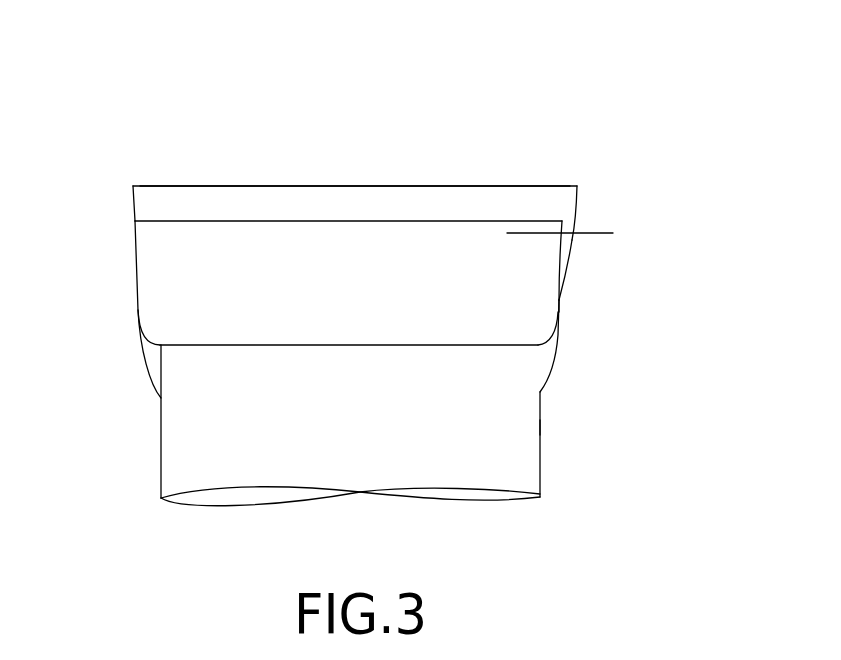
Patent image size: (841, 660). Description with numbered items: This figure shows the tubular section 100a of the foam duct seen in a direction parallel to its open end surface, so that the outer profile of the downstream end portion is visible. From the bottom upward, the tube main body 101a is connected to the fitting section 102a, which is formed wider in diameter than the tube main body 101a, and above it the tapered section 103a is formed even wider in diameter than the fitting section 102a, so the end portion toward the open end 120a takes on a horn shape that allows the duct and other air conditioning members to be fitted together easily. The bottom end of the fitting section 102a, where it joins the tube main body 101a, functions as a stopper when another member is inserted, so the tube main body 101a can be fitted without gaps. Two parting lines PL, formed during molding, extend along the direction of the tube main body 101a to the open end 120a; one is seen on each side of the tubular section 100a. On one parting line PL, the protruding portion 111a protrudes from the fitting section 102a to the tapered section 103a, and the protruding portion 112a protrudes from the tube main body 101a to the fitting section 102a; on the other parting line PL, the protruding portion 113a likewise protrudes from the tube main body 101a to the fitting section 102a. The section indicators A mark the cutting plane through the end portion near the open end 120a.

The tubular section 100a is at (397, 311).
The tube main body 101a is at (182, 446).
The fitting section 102a is at (152, 286).
The tapered section 103a is at (152, 205).
The protruding portion 111a is at (576, 248).
The protruding portion 112a is at (558, 367).
The protruding portion 113a is at (140, 362).
The open end 120a is at (331, 185).
The parting line PL is at (562, 311).
The section line A- A is at (520, 231).